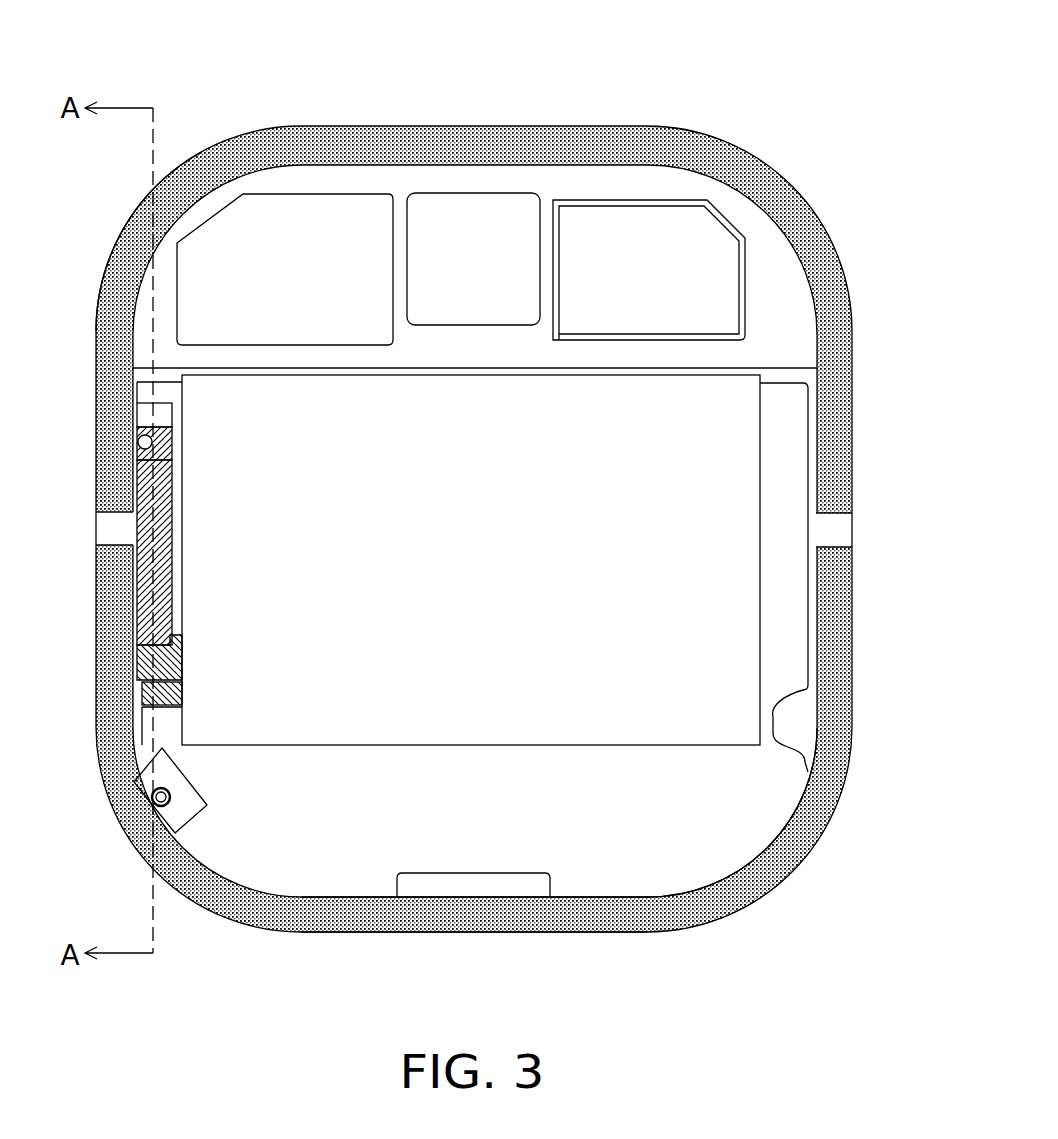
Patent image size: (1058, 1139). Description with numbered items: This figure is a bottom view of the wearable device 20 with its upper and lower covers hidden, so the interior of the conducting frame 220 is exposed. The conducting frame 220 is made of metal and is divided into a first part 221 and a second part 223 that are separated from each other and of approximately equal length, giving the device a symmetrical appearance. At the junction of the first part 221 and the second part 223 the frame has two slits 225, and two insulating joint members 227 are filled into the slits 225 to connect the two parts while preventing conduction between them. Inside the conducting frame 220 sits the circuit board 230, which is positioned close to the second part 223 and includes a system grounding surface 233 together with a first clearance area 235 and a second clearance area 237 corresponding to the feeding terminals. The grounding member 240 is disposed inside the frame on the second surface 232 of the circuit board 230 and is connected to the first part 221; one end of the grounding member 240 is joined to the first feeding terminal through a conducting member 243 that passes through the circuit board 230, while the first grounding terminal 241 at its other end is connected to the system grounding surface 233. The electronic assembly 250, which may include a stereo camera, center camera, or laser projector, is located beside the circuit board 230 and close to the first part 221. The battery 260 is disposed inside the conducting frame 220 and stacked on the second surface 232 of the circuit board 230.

The wearable device 20 is at (863, 93).
The conducting frame 220 is at (401, 88).
The first part 221 is at (130, 258).
The second part 223 is at (307, 917).
The slits 225 is at (75, 540).
The insulating joint members 227 is at (108, 528).
The circuit board 230 is at (633, 883).
The second surface 232 is at (742, 811).
The system grounding surface 233 is at (170, 690).
The first clearance area 235 is at (147, 403).
The second clearance area 237 is at (187, 800).
The grounding member 240 is at (170, 573).
The first grounding terminal 241 is at (143, 665).
The conducting member 243 is at (139, 440).
The electronic assembly 250 is at (475, 193).
The battery 260 is at (495, 722).